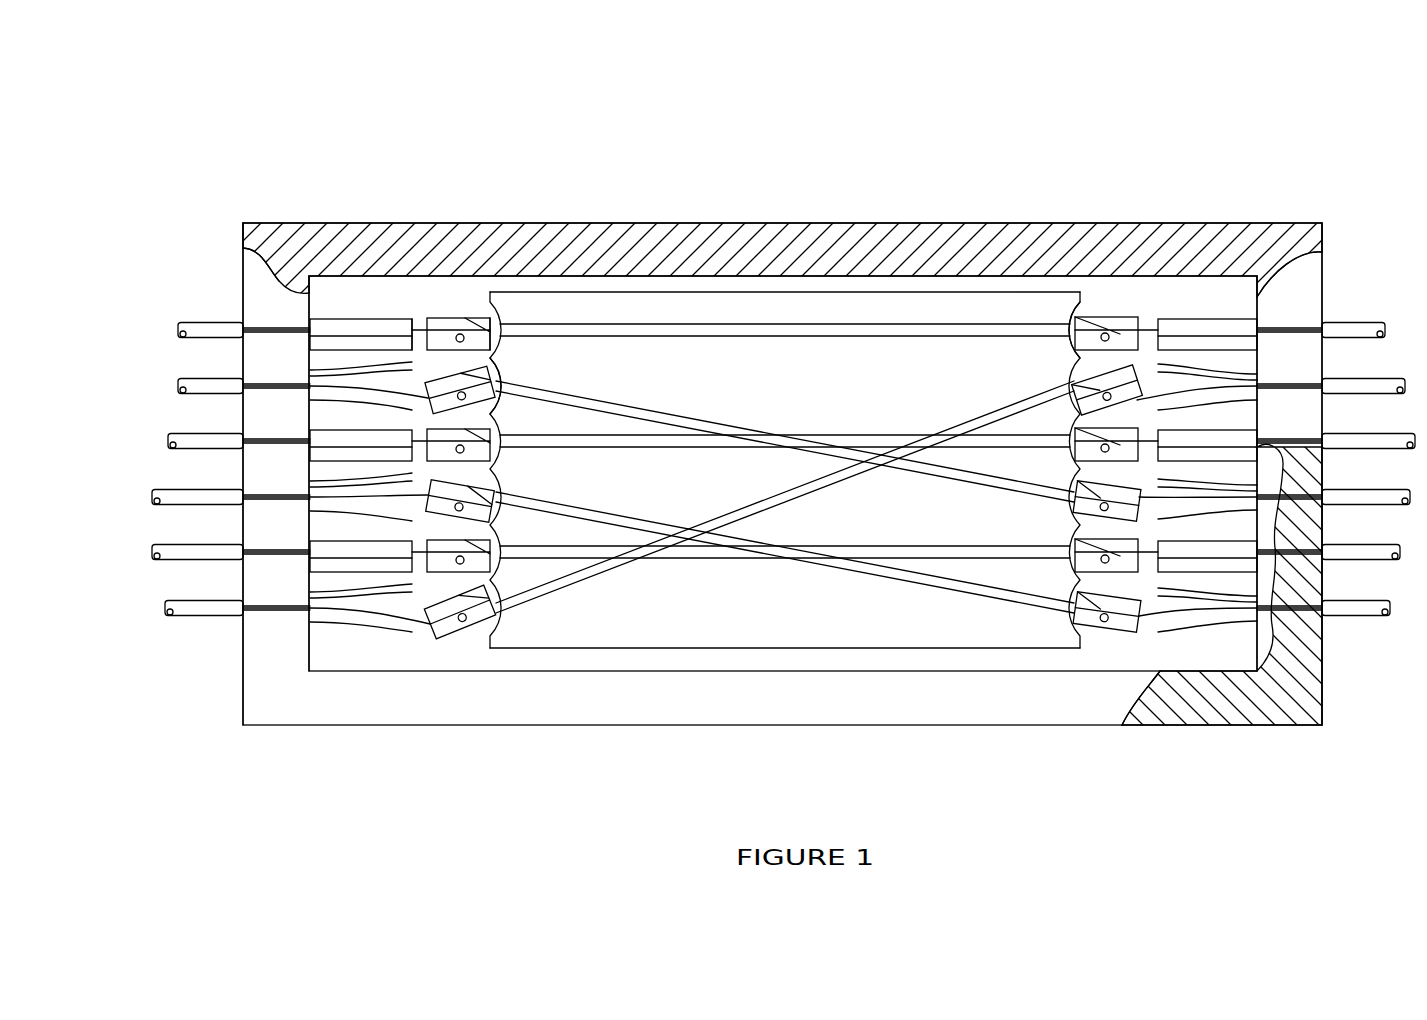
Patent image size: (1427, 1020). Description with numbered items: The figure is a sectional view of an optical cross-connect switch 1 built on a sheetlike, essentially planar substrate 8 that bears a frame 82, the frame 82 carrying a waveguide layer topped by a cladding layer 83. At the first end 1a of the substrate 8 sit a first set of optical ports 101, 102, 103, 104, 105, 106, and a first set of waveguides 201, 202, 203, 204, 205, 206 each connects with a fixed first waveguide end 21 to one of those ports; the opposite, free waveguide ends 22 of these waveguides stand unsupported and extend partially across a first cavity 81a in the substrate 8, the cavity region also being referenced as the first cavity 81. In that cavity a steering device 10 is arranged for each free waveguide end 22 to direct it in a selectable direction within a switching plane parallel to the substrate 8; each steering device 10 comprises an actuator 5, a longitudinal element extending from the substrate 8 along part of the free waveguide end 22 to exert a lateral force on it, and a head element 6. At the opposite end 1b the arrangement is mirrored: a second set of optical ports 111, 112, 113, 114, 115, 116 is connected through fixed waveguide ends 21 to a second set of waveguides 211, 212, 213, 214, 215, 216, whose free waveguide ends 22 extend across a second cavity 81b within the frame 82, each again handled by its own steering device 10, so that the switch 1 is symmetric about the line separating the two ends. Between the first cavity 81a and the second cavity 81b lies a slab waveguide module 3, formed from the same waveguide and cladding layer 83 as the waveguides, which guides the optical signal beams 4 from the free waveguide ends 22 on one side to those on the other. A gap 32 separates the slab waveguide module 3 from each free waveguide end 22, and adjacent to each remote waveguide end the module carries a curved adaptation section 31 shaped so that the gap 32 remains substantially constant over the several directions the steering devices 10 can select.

The optical cross-connect switch 1 is at (872, 117).
The first end 1a is at (222, 235).
The opposite end 1b is at (1346, 227).
The slab waveguide module 3 is at (780, 315).
The optical signal beams 4 is at (626, 425).
The actuator 5 is at (380, 320).
The head element 6 is at (470, 318).
The substrate 8 is at (1055, 250).
The steering device 10 is at (405, 316).
The first waveguide end 21 is at (255, 378).
The free waveguide end 22 is at (333, 320).
The adaptation section 31 is at (500, 400).
The gap 32 is at (498, 318).
The first cavity 81 is at (935, 290).
The first cavity 81a is at (335, 297).
The second cavity 81b is at (1258, 274).
The frame 82 is at (1128, 695).
The cladding layer 83 is at (1195, 695).
The optical port 101 is at (243, 320).
The optical port 102 is at (243, 376).
The optical port 103 is at (243, 431).
The optical port 104 is at (243, 487).
The optical port 105 is at (243, 542).
The optical port 106 is at (243, 598).
The optical port 111 is at (1325, 320).
The optical port 112 is at (1325, 376).
The optical port 113 is at (1325, 431).
The optical port 114 is at (1325, 487).
The optical port 115 is at (1325, 542).
The optical port 116 is at (1325, 598).
The waveguide 201 is at (276, 314).
The waveguide 202 is at (276, 370).
The waveguide 203 is at (276, 425).
The waveguide 204 is at (276, 481).
The waveguide 205 is at (276, 536).
The waveguide 206 is at (276, 592).
The waveguide 211 is at (1289, 314).
The waveguide 212 is at (1289, 370).
The waveguide 213 is at (1289, 425).
The waveguide 214 is at (1272, 490).
The waveguide 215 is at (1272, 546).
The waveguide 216 is at (1285, 635).